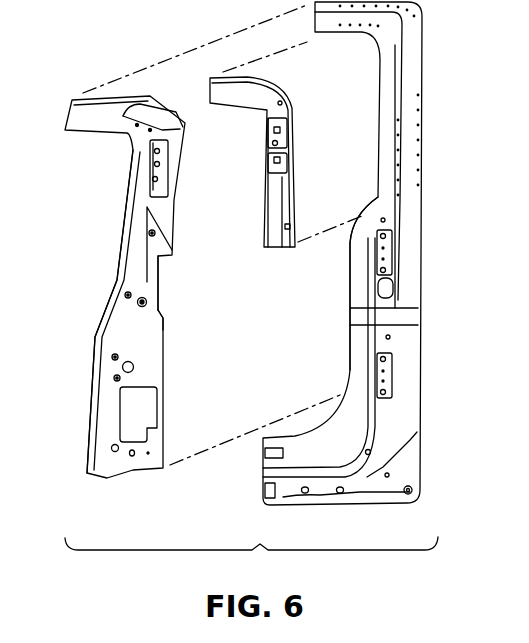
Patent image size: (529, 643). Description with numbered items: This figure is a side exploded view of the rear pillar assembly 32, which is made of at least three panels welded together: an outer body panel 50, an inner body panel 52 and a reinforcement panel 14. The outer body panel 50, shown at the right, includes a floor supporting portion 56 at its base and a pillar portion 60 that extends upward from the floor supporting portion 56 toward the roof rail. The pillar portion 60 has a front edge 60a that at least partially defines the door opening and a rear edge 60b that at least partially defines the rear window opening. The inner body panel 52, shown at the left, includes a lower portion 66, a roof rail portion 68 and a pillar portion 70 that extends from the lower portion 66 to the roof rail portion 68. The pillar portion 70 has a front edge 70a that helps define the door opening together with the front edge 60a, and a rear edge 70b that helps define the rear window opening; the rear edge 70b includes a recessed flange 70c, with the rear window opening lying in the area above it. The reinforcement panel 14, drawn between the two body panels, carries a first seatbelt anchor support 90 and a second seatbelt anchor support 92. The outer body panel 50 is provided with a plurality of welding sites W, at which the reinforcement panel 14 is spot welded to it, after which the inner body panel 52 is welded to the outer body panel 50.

The reinforcement panel 14 is at (297, 196).
The rear pillar assembly 32 is at (251, 558).
The outer body panel 50 is at (430, 171).
The inner body panel 52 is at (164, 322).
The floor supporting portion 56 is at (324, 490).
The pillar portion 60 is at (420, 294).
The front edge 60a is at (352, 240).
The rear edge 60b is at (423, 76).
The lower portion 66 is at (156, 438).
The roof rail portion 68 is at (97, 118).
The pillar portion 70 is at (177, 212).
The front edge 70a is at (112, 287).
The rear edge 70b is at (178, 165).
The recessed flange 70c is at (159, 293).
The first seatbelt anchor support 90 is at (289, 124).
The second seatbelt anchor support 92 is at (289, 160).
The welding sites W is at (358, 30).